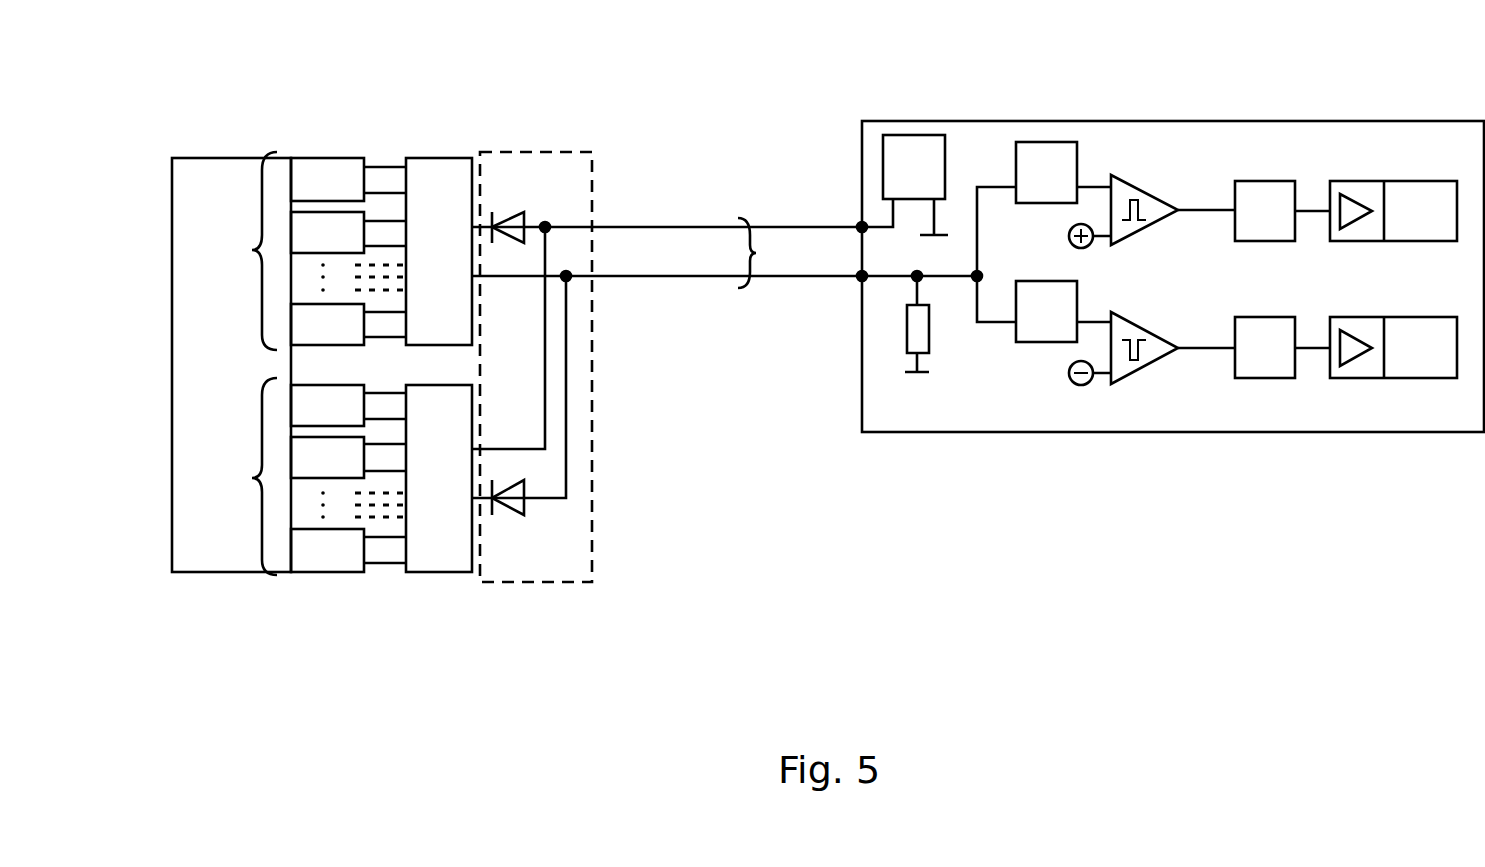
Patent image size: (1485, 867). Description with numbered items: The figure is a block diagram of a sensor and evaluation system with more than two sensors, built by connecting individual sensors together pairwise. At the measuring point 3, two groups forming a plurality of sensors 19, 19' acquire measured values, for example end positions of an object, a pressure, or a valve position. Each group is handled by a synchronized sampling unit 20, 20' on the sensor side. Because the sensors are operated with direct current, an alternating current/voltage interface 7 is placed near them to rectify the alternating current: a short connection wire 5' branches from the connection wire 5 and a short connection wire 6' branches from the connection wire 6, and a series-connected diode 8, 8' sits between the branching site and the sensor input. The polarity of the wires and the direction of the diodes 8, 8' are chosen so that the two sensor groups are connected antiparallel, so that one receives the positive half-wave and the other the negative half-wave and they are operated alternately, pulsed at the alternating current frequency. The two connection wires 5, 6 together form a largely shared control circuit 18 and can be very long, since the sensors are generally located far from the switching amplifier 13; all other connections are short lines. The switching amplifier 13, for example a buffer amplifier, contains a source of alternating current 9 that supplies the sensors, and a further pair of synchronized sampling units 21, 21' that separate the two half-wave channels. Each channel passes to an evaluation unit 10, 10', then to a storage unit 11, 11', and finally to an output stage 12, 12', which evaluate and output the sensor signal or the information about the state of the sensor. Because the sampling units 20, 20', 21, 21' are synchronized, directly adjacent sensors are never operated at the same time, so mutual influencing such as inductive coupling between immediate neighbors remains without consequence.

The measuring point 3 is at (231, 365).
The plurality of sensors 19 is at (293, 209).
The plurality of sensors 19' is at (289, 519).
The synchronized sampling unit 20 is at (439, 251).
The synchronized sampling unit 20' is at (439, 478).
The alternating current/voltage interface 7 is at (600, 543).
The diode 8 is at (495, 164).
The diode 8' is at (506, 565).
The connection wire 5 is at (667, 184).
The short connection wire 5' is at (557, 267).
The connection wire 6 is at (724, 317).
The short connection wire 6' is at (562, 387).
The shared control circuit 18 is at (764, 252).
The switching amplifier 13 is at (855, 420).
The source of alternating current 9 is at (907, 135).
The synchronized sampling unit 21 is at (1046, 172).
The synchronized sampling unit 21' is at (1046, 311).
The evaluation unit 10 is at (1134, 149).
The evaluation unit 10' is at (1137, 406).
The storage unit 11 is at (1265, 211).
The storage unit 11' is at (1265, 347).
The output stage 12 is at (1393, 152).
The output stage 12' is at (1393, 404).